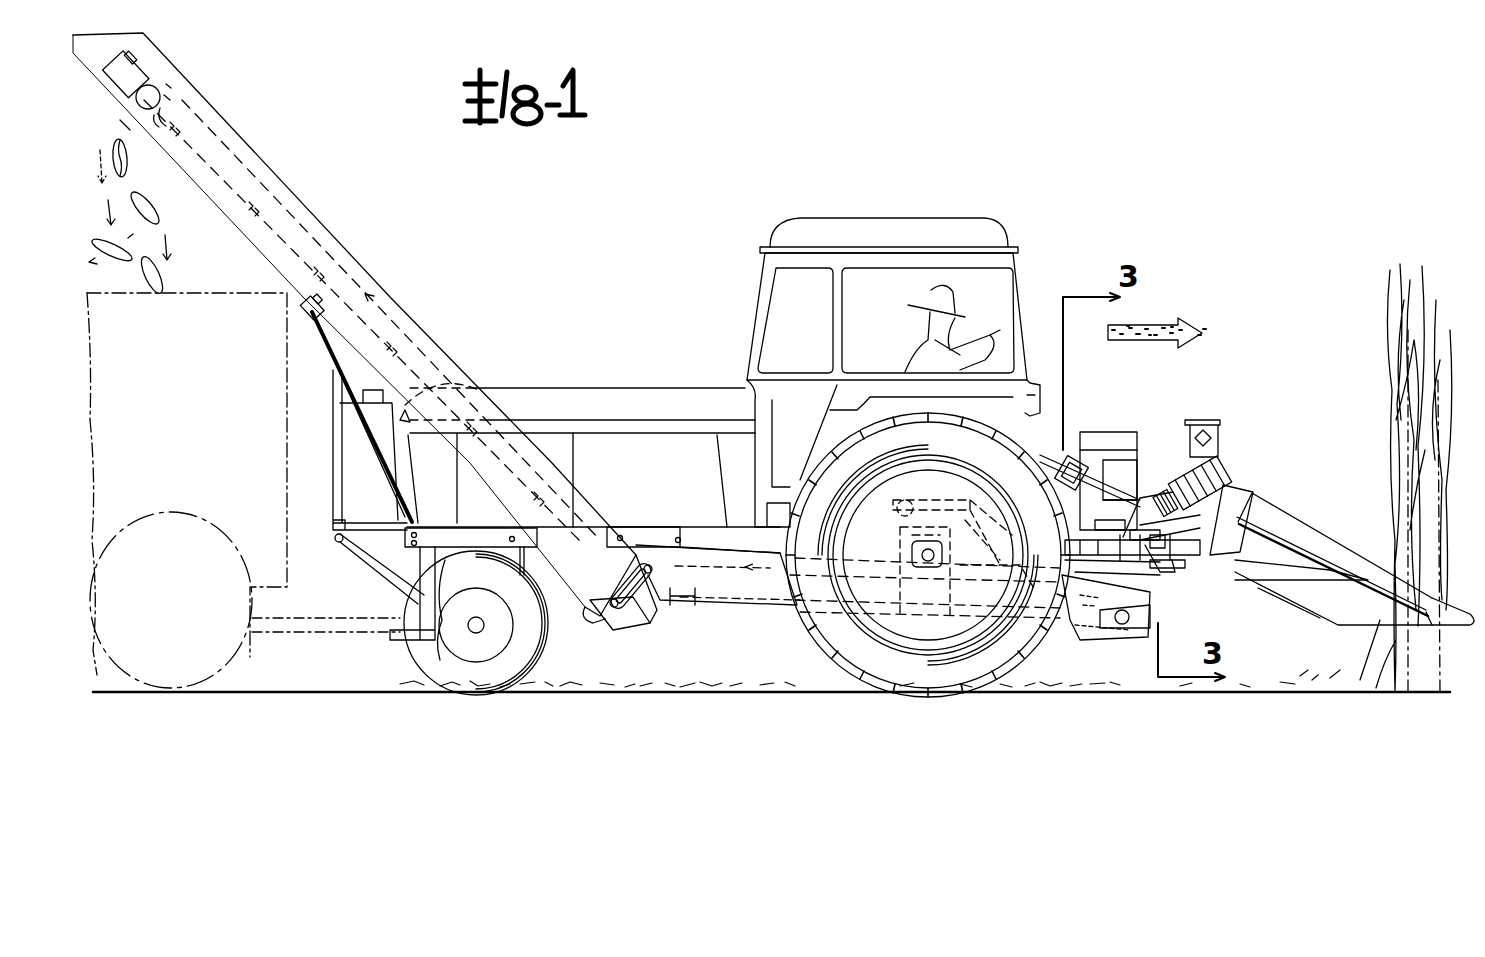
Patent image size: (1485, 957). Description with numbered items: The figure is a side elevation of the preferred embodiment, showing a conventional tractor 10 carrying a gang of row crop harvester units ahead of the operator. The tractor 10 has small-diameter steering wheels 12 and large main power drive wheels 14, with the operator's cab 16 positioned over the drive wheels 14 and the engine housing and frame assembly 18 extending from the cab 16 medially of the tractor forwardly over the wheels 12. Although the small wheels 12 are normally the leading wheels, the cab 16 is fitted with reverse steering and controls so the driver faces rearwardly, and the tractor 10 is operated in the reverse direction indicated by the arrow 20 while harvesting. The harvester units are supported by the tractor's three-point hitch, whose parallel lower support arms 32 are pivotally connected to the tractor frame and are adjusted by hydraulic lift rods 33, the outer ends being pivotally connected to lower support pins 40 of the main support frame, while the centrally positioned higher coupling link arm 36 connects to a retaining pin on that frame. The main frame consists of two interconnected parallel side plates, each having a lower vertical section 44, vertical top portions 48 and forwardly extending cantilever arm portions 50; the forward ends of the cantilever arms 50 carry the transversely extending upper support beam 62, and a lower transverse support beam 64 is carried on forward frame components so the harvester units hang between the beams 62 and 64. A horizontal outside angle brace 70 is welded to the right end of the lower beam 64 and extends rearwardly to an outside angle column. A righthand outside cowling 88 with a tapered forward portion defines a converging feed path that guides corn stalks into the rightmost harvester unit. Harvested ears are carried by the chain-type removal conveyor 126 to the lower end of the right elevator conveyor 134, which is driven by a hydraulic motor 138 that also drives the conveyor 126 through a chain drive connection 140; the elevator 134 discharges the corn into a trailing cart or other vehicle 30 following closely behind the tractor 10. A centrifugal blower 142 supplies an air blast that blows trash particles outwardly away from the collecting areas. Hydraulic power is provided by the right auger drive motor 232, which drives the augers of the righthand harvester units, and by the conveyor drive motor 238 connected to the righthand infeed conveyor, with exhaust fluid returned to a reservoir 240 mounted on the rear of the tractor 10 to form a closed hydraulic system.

The tractor 10 is at (658, 288).
The steering wheels 12 is at (537, 653).
The main power drive wheels 14 is at (828, 650).
The operator's cab 16 is at (905, 235).
The engine housing and frame assembly 18 is at (657, 379).
The arrow 20 is at (1152, 341).
The trailing cart or other vehicle 30 is at (280, 578).
The lower support arms 32 is at (1106, 618).
The hydraulic lift rods 33 is at (998, 560).
The coupling link arm 36 is at (1013, 510).
The lower support pins 40 is at (1160, 595).
The lower vertical section 44 is at (1292, 505).
The vertical top portions 48 is at (1085, 478).
The cantilever arm portions 50 is at (1145, 432).
The upper support beam 62 is at (1210, 437).
The lower transverse support beam 64 is at (1185, 560).
The horizontal outside angle brace 70 is at (1172, 575).
The righthand outside cowling 88 is at (1330, 547).
The removal conveyor 126 is at (742, 596).
The right elevator conveyor 134 is at (380, 302).
The hydraulic motor 138 is at (160, 86).
The chain drive connection 140 is at (605, 612).
The centrifugal blower 142 is at (1127, 465).
The right auger drive motor 232 is at (1027, 433).
The conveyor drive motor 238 is at (1160, 548).
The reservoir 240 is at (353, 462).